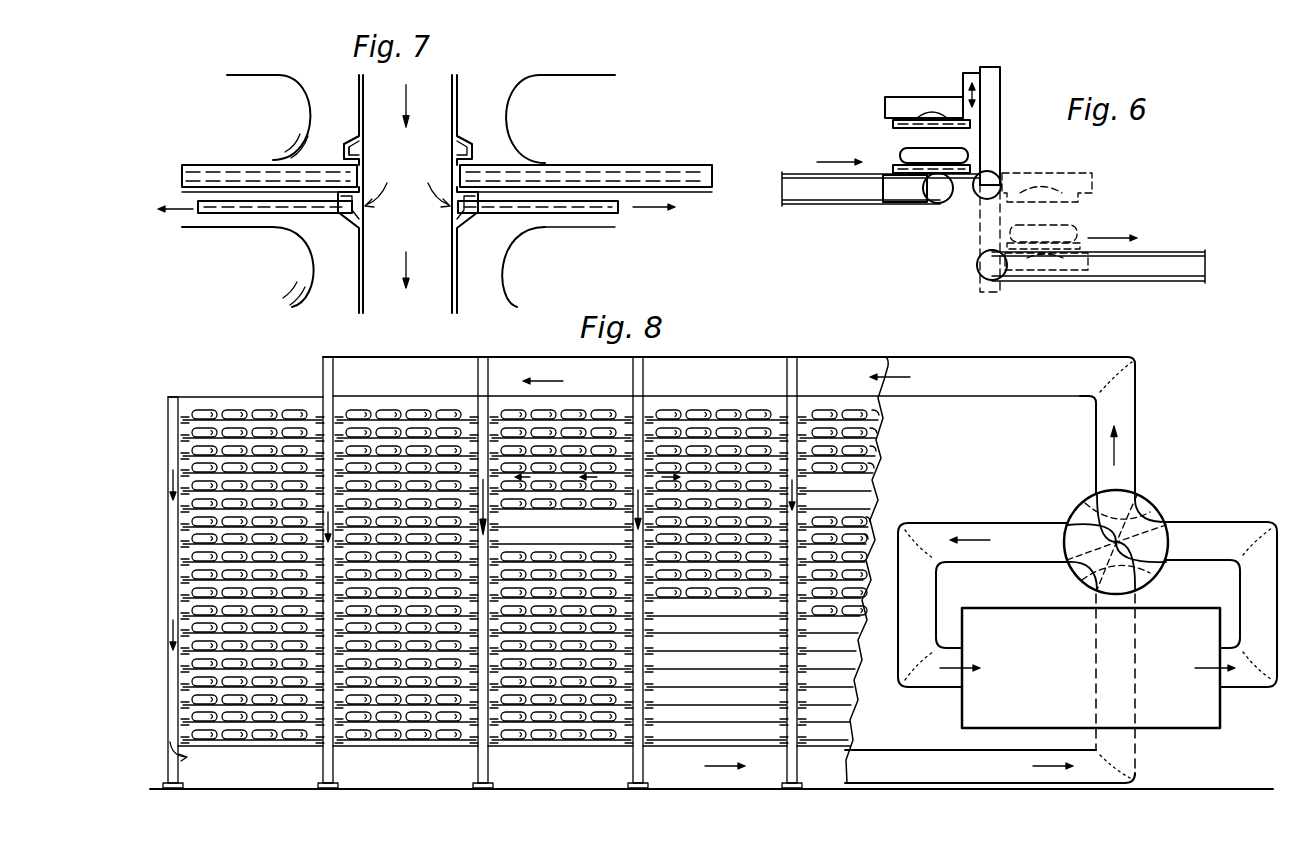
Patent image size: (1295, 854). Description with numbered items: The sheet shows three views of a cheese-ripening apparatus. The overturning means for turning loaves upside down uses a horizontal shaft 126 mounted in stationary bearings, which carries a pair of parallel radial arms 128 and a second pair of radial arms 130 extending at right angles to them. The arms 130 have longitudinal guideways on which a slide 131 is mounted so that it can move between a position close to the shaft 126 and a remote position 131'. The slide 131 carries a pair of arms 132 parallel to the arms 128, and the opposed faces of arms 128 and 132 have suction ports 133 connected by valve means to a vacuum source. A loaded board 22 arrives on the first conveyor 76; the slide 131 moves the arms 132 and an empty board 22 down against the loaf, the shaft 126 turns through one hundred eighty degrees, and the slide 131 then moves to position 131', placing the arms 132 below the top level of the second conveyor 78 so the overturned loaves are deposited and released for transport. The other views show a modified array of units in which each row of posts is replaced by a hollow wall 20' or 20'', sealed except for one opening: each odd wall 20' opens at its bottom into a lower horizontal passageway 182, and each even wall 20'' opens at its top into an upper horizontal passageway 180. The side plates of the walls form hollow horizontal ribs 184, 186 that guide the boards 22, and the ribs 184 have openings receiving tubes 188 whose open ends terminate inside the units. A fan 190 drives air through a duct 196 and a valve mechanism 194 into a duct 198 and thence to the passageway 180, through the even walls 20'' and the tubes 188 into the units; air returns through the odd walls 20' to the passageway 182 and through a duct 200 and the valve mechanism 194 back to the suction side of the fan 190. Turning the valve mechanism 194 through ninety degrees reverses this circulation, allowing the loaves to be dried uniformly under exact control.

In FIG. 7, the hollow wall 20' is at (398, 201).
In FIG. 8, the hollow wall 20' is at (525, 572).
In FIG. 8, the hollow wall 20'' is at (507, 762).
In FIG. 7, the board 22 is at (204, 178).
In FIG. 6, the board 22 is at (893, 167).
In FIG. 6, the first conveyor 76 is at (790, 173).
In FIG. 6, the second conveyor 78 is at (1168, 252).
In FIG. 6, the horizontal shaft 126 is at (978, 195).
In FIG. 6, the radial arms 128 is at (897, 190).
In FIG. 6, the radial arms 130 is at (1000, 80).
In FIG. 6, the slide 131 is at (956, 56).
In FIG. 6, the remote slide position 131' is at (1030, 309).
In FIG. 6, the arms 132 is at (898, 103).
In FIG. 6, the ports 133 is at (930, 112).
In FIG. 8, the horizontal passageway 180 is at (752, 367).
In FIG. 8, the horizontal passageway 182 is at (565, 775).
In FIG. 7, the hollow horizontal rib 184 is at (345, 232).
In FIG. 7, the hollow horizontal rib 186 is at (352, 135).
In FIG. 7, the tube 188 is at (230, 207).
In FIG. 8, the fan 190 is at (977, 708).
In FIG. 8, the valve mechanism 194 is at (1158, 486).
In FIG. 8, the duct 196 is at (1230, 533).
In FIG. 8, the duct 198 is at (1022, 380).
In FIG. 8, the duct 200 is at (963, 772).